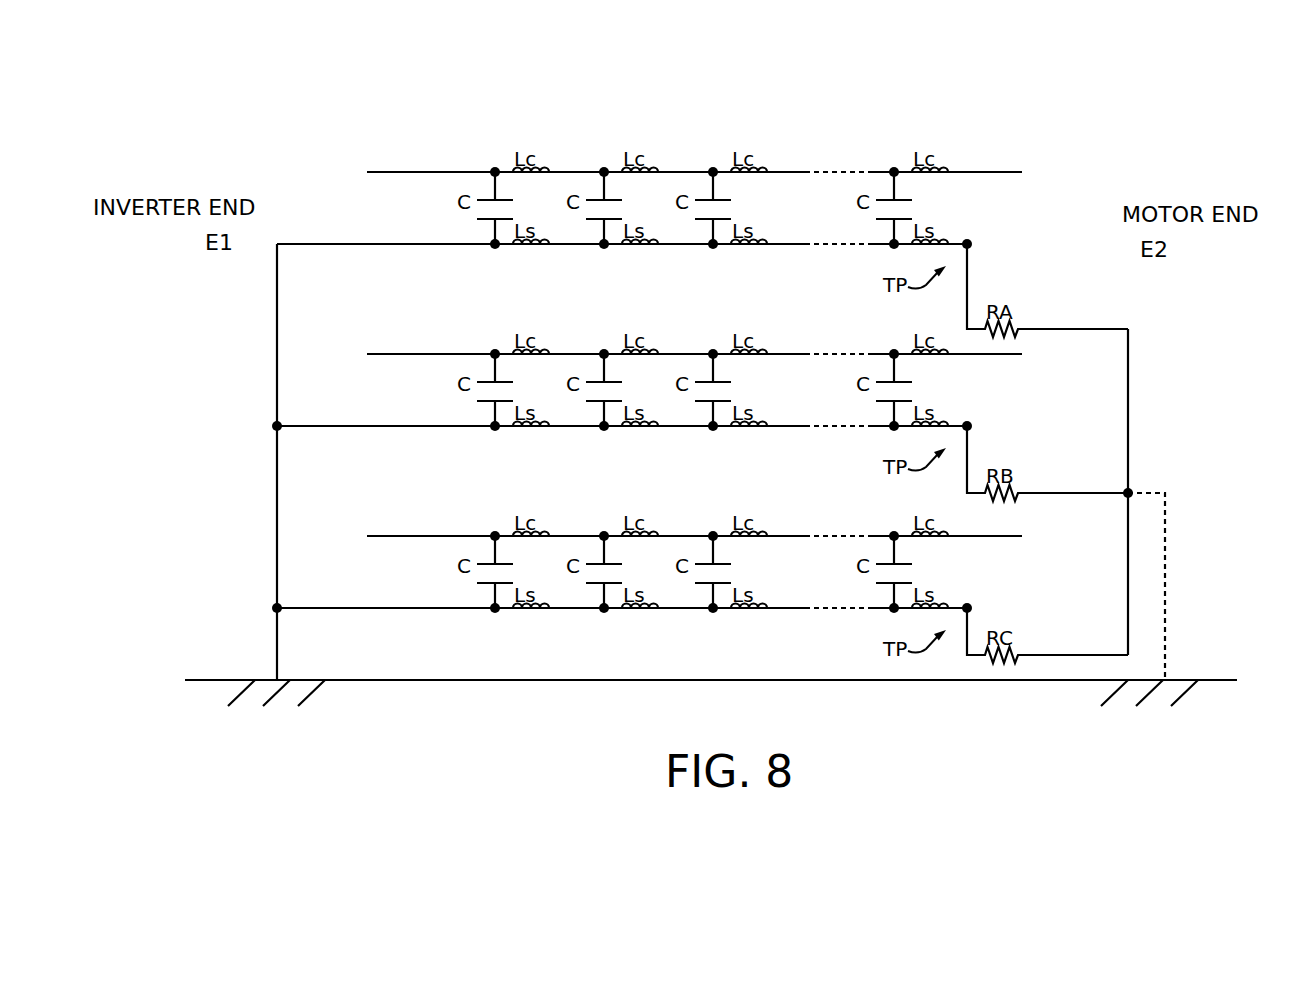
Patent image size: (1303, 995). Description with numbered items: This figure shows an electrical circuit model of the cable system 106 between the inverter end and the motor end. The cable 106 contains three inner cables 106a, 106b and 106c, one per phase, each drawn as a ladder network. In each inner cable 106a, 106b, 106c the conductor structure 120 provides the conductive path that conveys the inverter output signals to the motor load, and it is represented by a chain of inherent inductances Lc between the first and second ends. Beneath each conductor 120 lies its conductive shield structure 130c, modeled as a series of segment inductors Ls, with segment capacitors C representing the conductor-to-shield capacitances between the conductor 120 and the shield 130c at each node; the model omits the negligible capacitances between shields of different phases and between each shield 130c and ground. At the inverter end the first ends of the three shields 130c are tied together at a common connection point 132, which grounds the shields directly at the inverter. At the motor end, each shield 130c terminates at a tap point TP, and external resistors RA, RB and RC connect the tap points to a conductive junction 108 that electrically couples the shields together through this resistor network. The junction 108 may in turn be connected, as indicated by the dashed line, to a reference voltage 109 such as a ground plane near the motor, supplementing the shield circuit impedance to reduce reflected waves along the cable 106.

The cable 106 is at (390, 50).
The inner cable 106a is at (434, 127).
The inner cable 106b is at (432, 309).
The inner cable 106c is at (432, 490).
The conductor structure 120 is at (706, 356).
The conductive shield structure 130c is at (622, 407).
The common connection point 132 is at (277, 568).
The conductive junction 108 is at (1129, 471).
The reference voltage 109 is at (1166, 532).